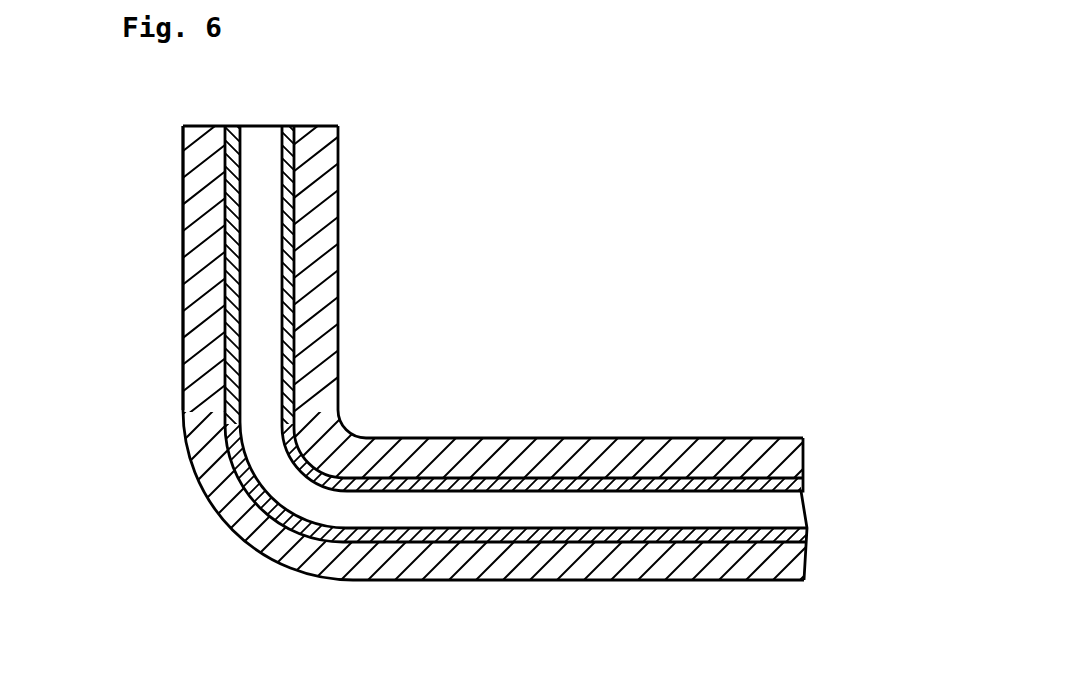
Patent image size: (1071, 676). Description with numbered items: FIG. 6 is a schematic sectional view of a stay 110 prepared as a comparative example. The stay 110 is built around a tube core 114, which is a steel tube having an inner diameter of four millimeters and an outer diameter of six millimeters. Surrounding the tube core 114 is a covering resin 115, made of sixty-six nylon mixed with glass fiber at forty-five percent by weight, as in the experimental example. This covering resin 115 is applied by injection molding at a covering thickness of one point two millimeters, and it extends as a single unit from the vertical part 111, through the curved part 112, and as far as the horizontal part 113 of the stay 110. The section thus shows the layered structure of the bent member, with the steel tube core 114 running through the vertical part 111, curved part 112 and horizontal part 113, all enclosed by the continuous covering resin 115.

The stay 110 is at (535, 338).
The vertical part 111 is at (183, 238).
The curved part 112 is at (248, 532).
The horizontal part 113 is at (613, 566).
The tube core 114 is at (793, 485).
The covering resin 115 is at (694, 448).